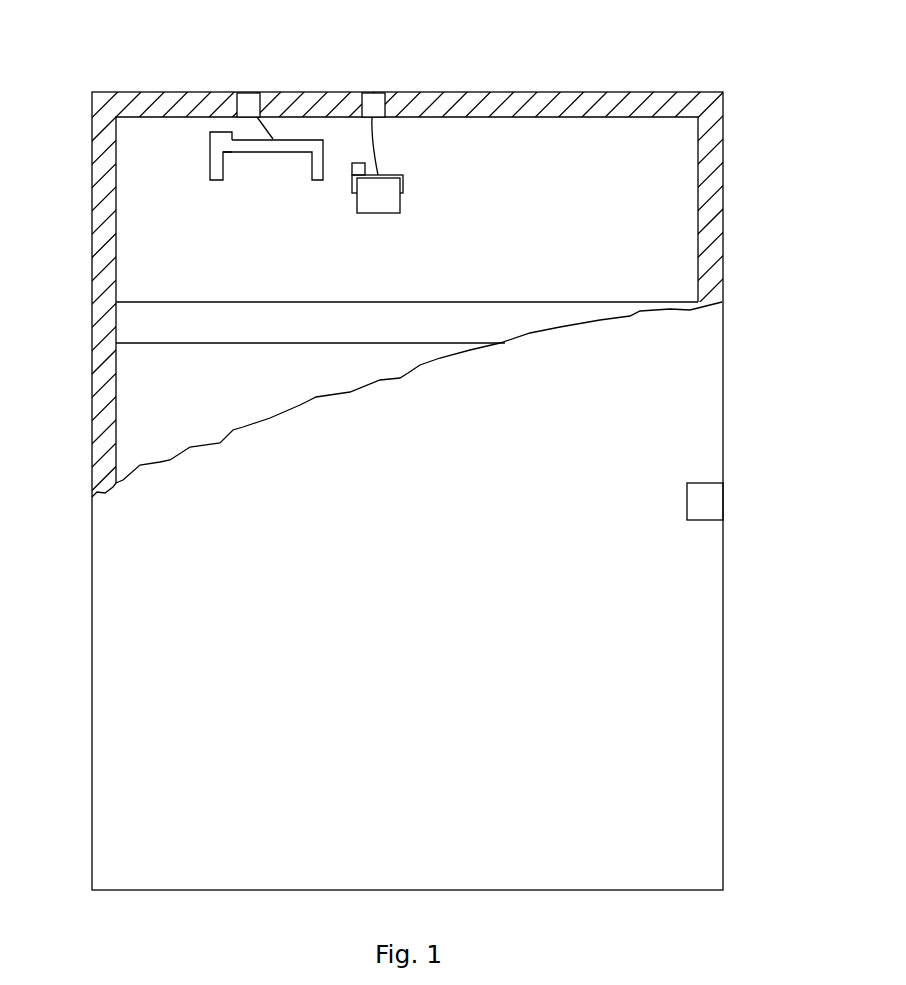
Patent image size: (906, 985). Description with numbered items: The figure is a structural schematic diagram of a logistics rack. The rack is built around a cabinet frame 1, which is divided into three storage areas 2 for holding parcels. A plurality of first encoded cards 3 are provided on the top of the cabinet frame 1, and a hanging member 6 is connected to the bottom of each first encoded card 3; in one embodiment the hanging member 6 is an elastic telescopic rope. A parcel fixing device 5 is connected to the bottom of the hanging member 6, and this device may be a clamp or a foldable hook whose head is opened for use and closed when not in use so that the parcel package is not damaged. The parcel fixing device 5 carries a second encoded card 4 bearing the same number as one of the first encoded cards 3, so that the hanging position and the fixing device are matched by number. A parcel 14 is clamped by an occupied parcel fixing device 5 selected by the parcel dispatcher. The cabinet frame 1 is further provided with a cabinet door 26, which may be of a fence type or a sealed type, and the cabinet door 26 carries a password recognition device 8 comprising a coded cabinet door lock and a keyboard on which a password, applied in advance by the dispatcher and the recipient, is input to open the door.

The cabinet frame 1 is at (92, 250).
The storage area 2 is at (137, 202).
The first encoded card 3 is at (257, 95).
The second encoded card 4 is at (207, 125).
The parcel fixing device 5 is at (325, 137).
The hanging member 6 is at (375, 145).
The parcel 14 is at (400, 203).
The cabinet door 26 is at (672, 403).
The password recognition device 8 is at (715, 500).